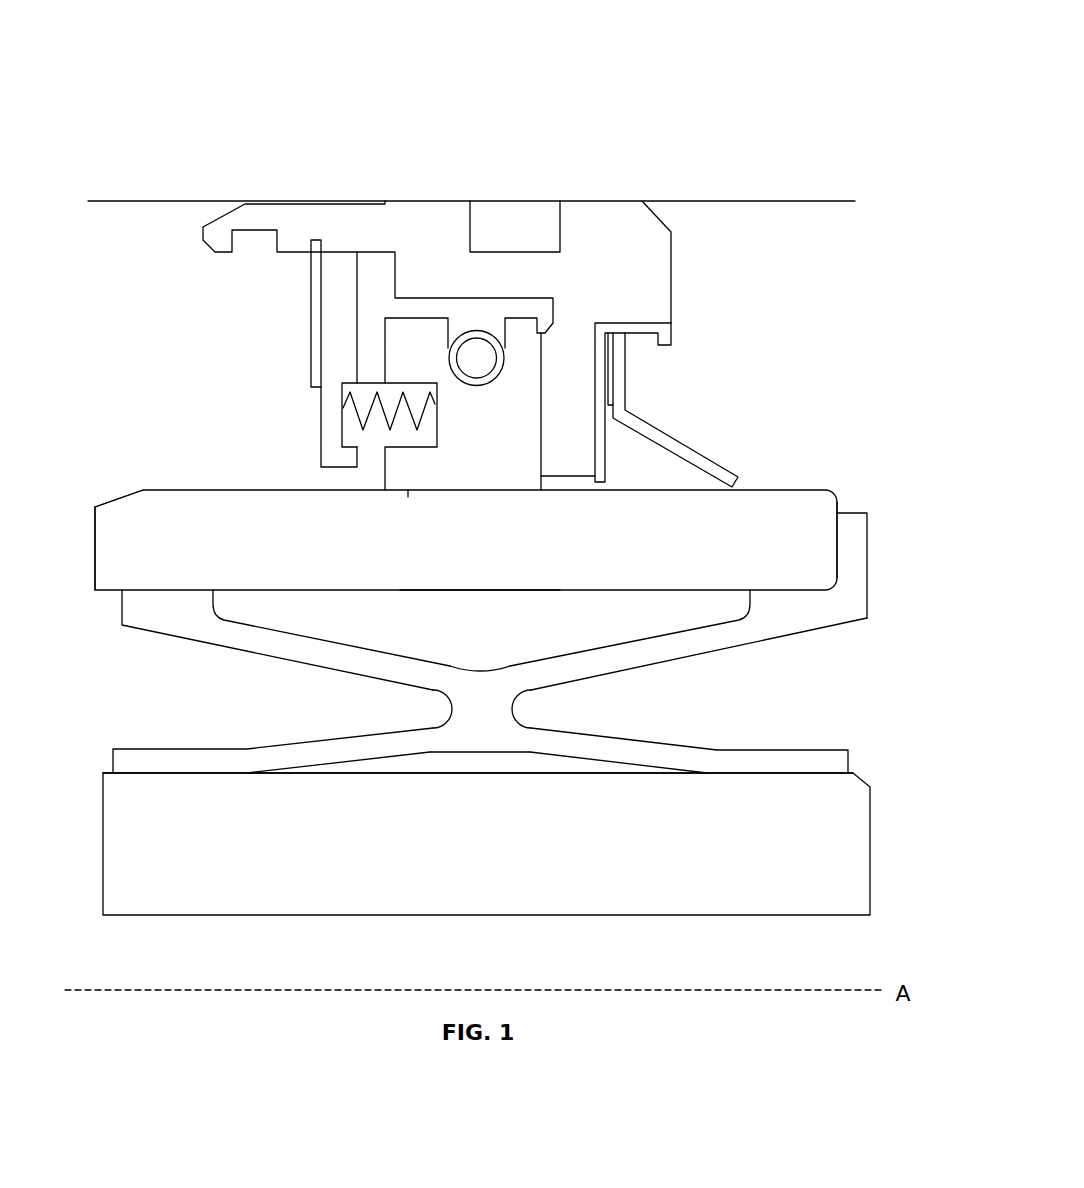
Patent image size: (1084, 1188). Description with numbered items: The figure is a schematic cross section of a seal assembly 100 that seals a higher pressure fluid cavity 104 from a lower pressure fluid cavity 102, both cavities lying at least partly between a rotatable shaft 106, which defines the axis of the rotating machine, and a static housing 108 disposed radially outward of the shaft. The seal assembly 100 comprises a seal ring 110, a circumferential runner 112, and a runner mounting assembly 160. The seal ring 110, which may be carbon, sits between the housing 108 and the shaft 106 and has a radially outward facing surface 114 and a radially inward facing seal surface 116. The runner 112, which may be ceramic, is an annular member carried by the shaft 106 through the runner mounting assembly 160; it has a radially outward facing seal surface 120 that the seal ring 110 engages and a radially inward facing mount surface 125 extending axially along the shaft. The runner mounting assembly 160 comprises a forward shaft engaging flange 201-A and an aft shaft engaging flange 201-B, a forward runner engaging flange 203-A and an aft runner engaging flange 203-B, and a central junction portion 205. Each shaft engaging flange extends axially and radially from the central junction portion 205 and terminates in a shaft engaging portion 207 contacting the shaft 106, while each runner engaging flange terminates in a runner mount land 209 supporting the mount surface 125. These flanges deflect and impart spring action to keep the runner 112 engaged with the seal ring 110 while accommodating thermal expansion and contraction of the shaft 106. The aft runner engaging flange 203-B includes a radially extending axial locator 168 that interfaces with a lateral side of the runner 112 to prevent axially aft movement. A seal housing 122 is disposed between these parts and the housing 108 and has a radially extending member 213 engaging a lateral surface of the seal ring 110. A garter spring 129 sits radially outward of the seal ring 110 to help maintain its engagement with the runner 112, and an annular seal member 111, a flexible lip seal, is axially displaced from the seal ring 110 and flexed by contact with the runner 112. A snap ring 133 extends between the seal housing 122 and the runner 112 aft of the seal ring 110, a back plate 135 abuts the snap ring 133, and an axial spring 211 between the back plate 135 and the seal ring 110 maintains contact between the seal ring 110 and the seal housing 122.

The seal assembly 100 is at (792, 60).
The lower pressure fluid cavity 102 is at (137, 344).
The higher pressure fluid cavity 104 is at (750, 344).
The rotatable shaft 106 is at (683, 916).
The housing 108 is at (745, 184).
The seal ring 110 is at (460, 432).
The annular seal member 111 is at (672, 445).
The circumferential runner 112 is at (445, 554).
The radially outward facing surface 114 is at (415, 317).
The radially inward facing seal surface 116 is at (410, 490).
The radially outward facing seal surface 120 is at (187, 490).
The seal housing 122 is at (597, 233).
The radially inward facing mount surface 125 is at (502, 590).
The garter spring 129 is at (476, 331).
The snap ring 133 is at (312, 287).
The back plate 135 is at (326, 434).
The runner mounting assembly 160 is at (866, 678).
The axial locator 168 is at (857, 547).
The forward shaft engaging flange 201-A is at (352, 745).
The aft shaft engaging flange 201-B is at (748, 758).
The forward runner engaging flange 203-A is at (250, 640).
The aft runner engaging flange 203-B is at (650, 655).
The central junction portion 205 is at (502, 720).
The shaft engaging portion 207 is at (175, 773).
The runner mount land 209 is at (145, 588).
The axial spring 211 is at (375, 392).
The radially extending member 213 is at (570, 363).